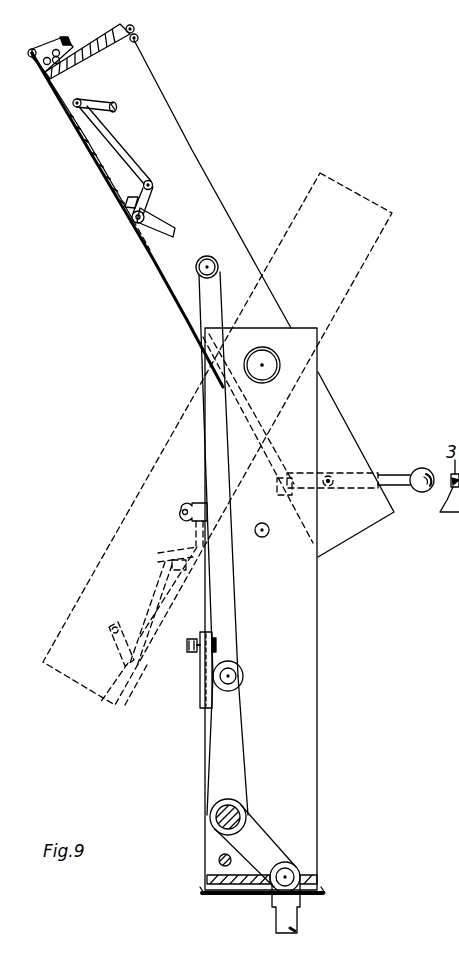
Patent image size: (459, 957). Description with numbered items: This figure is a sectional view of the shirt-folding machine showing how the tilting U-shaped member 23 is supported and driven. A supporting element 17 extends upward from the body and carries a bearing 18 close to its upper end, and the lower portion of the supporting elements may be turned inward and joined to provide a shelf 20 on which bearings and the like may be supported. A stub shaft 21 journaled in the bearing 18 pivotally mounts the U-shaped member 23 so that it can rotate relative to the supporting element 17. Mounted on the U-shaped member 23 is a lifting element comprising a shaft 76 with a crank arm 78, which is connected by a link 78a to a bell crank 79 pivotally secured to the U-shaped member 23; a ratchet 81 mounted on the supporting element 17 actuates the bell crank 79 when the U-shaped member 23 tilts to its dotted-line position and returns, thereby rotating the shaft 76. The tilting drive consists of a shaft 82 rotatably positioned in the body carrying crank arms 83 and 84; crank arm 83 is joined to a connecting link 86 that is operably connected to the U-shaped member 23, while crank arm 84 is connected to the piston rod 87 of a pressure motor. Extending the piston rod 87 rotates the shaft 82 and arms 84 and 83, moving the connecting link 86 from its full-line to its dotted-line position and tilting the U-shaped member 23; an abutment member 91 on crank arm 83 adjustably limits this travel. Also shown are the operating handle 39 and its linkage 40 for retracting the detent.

The supporting element 17 is at (310, 774).
The bearing 18 is at (277, 370).
The shelf 20 is at (207, 880).
The stub shaft 21 is at (260, 358).
The U-shaped member 23 is at (203, 188).
The operating handle 39 is at (420, 473).
The linkage 40 is at (47, 45).
The shaft 76 is at (117, 108).
The crank arm 78 is at (98, 103).
The link 78a is at (110, 143).
The bell crank 79 is at (148, 199).
The ratchet 81 is at (180, 523).
The shaft 82 is at (212, 813).
The crank arm 83 is at (235, 742).
The crank arm 84 is at (255, 838).
The connecting link 86 is at (230, 567).
The piston rod 87 is at (280, 920).
The abutment member 91 is at (203, 677).